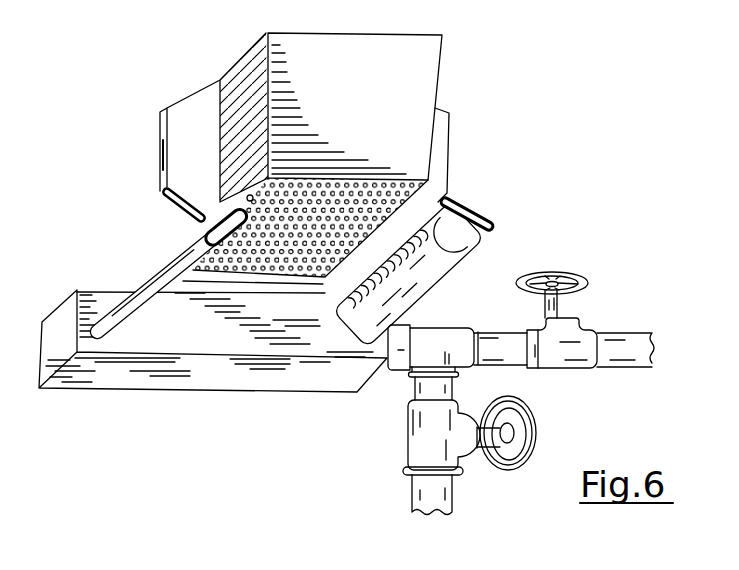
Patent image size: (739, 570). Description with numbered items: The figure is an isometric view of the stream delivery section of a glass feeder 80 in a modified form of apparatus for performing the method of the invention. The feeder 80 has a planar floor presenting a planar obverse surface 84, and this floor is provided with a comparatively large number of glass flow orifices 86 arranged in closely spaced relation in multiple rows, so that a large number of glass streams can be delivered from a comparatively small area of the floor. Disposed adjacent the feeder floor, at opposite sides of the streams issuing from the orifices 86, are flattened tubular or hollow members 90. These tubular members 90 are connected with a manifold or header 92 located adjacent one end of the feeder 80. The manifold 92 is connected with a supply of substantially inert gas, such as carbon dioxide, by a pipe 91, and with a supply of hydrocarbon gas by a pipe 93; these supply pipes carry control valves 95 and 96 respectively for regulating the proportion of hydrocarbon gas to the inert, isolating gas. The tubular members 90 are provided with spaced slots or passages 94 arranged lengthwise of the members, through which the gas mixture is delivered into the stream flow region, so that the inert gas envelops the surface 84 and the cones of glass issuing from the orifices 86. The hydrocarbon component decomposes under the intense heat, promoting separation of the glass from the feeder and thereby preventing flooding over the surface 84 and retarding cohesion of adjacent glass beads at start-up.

The feeder 80 is at (442, 78).
The planar obverse surface 84 is at (283, 262).
The glass flow orifices 86 is at (353, 205).
The flattened tubular members 90 is at (138, 278).
The pipe 91 is at (623, 333).
The manifold 92 is at (270, 388).
The pipe 93 is at (452, 493).
The slots or passages 94 is at (253, 197).
The control valve 95 is at (577, 256).
The control valve 96 is at (537, 432).